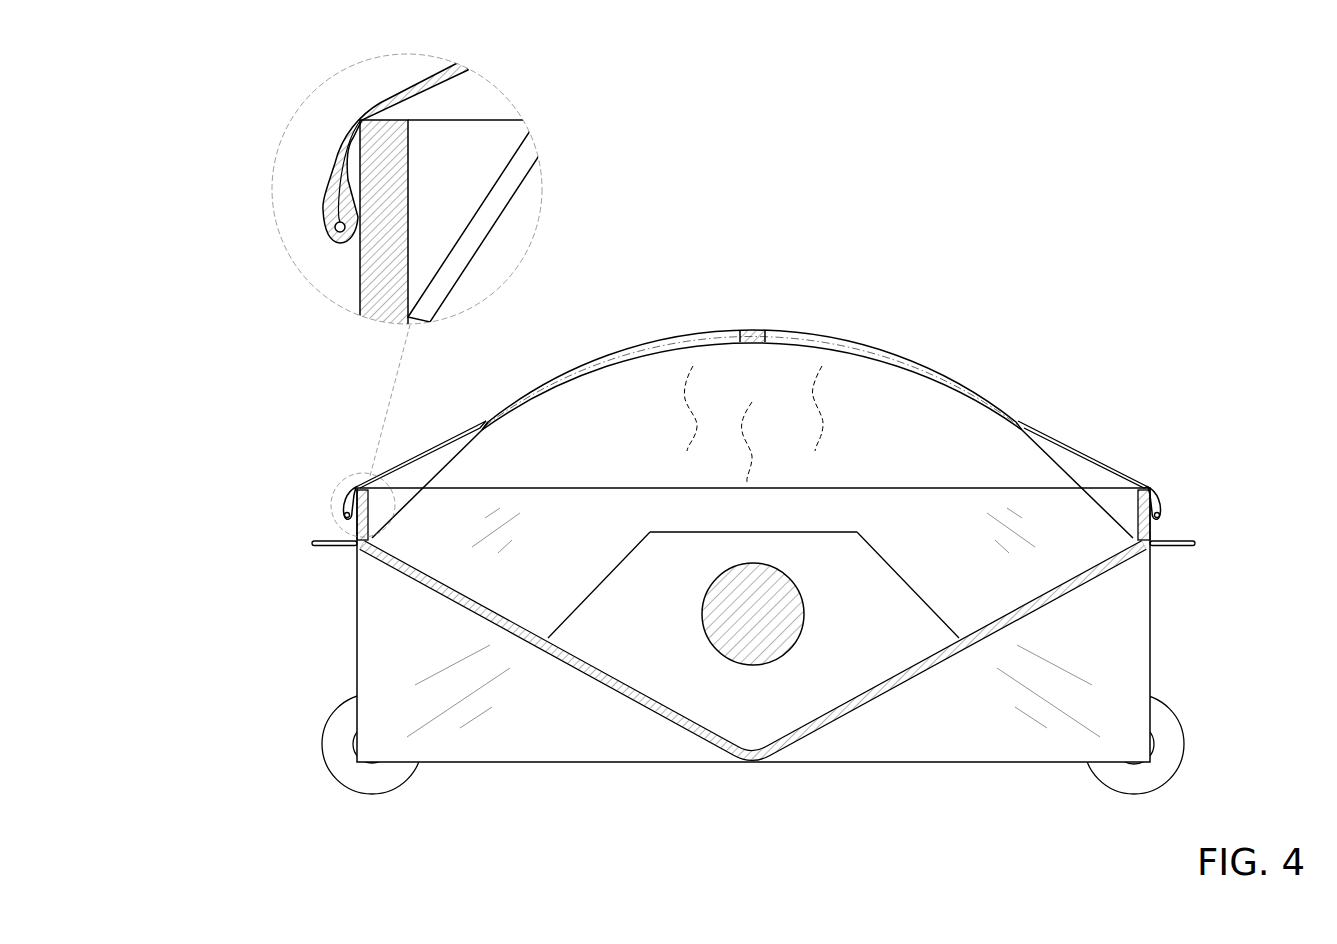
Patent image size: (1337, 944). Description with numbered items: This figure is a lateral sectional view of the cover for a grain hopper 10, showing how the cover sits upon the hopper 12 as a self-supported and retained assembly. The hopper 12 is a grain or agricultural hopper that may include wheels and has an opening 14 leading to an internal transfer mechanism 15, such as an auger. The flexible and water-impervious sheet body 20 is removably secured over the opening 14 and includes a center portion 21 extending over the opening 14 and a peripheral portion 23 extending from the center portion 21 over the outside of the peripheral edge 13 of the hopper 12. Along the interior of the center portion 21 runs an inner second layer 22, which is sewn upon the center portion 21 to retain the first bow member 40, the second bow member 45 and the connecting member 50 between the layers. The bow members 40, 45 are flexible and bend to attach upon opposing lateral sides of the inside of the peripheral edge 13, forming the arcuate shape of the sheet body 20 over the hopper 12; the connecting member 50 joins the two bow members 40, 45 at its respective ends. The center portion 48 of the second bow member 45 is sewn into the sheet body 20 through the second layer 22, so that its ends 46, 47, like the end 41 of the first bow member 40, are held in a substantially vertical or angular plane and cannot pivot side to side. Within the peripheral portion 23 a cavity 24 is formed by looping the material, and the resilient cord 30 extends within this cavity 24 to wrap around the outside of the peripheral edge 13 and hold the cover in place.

The cover for a grain hopper 10 is at (1077, 190).
The hopper 12 is at (1117, 675).
The peripheral edge 13 is at (1143, 530).
The opening 14 is at (1103, 478).
The internal transfer mechanism 15 is at (733, 638).
The sheet body 20 is at (1058, 428).
The center portion 21 is at (765, 332).
The second layer 22 is at (565, 387).
The peripheral portion 23 is at (1150, 490).
The cavity 24 is at (868, 432).
The resilient cord 30 is at (328, 232).
The first bow member 40 is at (473, 207).
The end of first bow member 41 is at (494, 220).
The second bow member 45 is at (453, 428).
The end of second bow member 46 is at (410, 490).
The end of second bow member 47 is at (1120, 500).
The center portion of second bow member 48 is at (803, 330).
The connecting member 50 is at (752, 335).